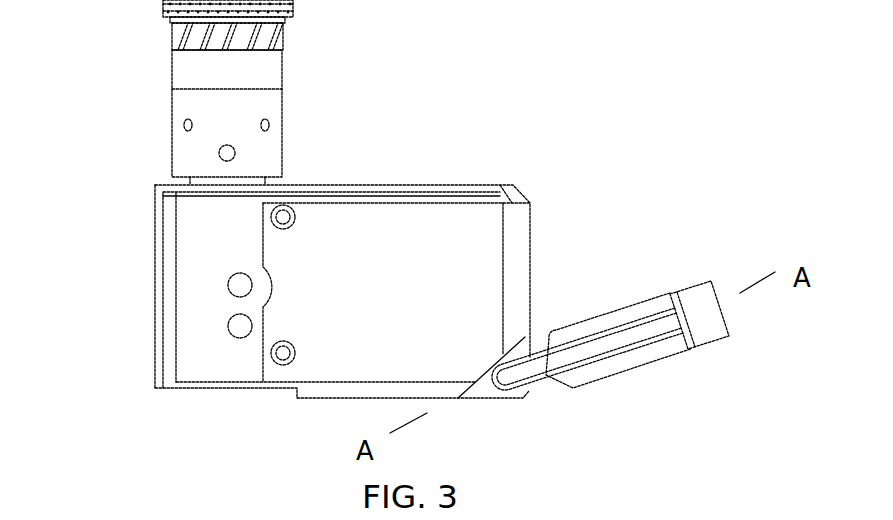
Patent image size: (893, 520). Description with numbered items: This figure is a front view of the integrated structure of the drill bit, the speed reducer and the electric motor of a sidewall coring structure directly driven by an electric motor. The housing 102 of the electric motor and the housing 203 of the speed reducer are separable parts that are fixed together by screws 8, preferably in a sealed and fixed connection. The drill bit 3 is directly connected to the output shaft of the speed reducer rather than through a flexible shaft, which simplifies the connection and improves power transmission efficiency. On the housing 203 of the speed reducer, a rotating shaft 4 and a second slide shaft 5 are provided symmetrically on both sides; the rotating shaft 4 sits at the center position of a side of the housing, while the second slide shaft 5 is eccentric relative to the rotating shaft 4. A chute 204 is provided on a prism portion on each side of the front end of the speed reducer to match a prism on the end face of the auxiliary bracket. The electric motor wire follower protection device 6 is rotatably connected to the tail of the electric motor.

The drill bit 3 is at (213, 100).
The rotating shaft 4 is at (232, 276).
The second slide shaft 5 is at (232, 335).
The electric motor wire follower protection device 6 is at (602, 292).
The screws 8 is at (290, 212).
The housing of the electric motor 102 is at (402, 227).
The housing of the speed reducer 203 is at (200, 305).
The chute 204 is at (175, 250).